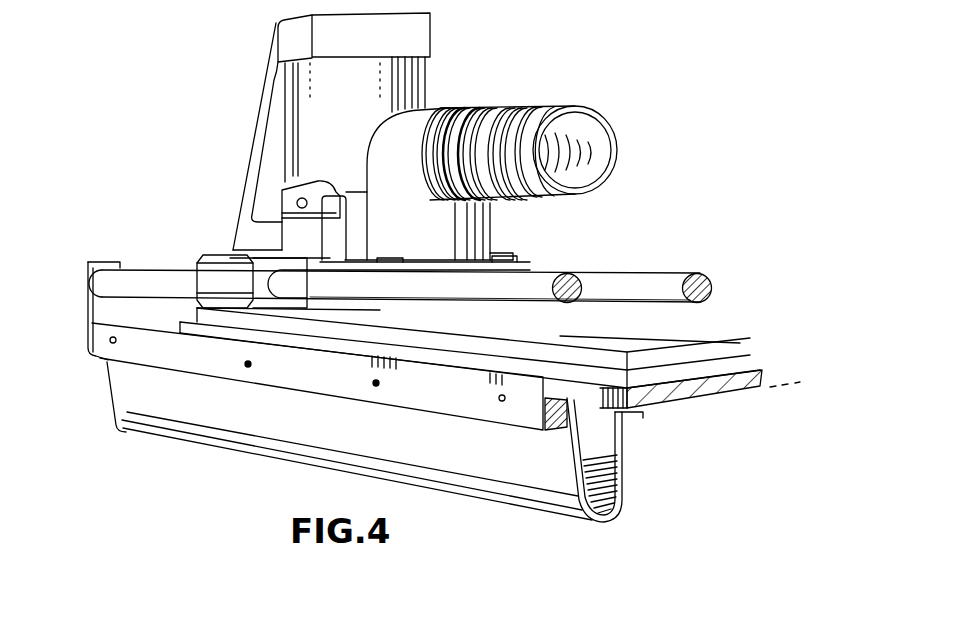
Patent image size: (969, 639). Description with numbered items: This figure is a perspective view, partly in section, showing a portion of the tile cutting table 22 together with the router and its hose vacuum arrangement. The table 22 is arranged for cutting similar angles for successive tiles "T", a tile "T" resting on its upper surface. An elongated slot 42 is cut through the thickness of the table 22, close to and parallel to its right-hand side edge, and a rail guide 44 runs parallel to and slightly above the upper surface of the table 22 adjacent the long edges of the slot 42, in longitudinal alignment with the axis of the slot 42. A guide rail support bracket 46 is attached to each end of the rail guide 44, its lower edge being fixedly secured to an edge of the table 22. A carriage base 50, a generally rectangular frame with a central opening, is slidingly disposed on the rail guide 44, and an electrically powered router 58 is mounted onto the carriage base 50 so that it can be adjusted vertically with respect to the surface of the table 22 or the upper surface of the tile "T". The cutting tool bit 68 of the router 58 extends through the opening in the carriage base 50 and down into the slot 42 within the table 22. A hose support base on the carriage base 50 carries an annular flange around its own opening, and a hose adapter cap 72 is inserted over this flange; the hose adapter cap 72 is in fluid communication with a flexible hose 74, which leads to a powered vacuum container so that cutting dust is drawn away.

The tile cutting table 22 is at (760, 384).
The elongated slot 42 is at (622, 427).
The rail guide 44 is at (600, 270).
The guide rail support bracket 46 is at (110, 308).
The carriage base 50 is at (223, 255).
The router 58 is at (432, 42).
The cutting tool bit 68 is at (345, 338).
The hose adapter cap 72 is at (420, 110).
The flexible hose 74 is at (522, 108).
The tile T is at (739, 341).